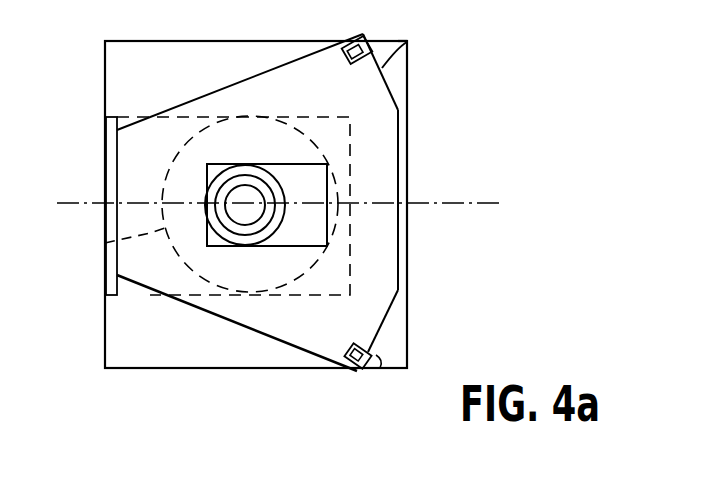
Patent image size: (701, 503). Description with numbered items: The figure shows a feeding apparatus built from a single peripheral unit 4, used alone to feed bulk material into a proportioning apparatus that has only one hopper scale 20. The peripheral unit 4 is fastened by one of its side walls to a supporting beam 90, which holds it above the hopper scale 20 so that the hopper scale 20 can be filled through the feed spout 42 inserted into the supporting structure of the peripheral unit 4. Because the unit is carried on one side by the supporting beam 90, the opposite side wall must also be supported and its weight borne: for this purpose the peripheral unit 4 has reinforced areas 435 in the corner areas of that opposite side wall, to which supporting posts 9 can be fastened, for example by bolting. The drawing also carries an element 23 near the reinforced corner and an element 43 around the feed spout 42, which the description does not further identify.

The peripheral unit 4 is at (390, 145).
The supporting posts 9 is at (388, 30).
The hopper scale 20 is at (105, 243).
The rounded corner 23 is at (390, 75).
The feed spout 42 is at (245, 217).
The housing block 43 is at (315, 233).
The supporting beam 90 is at (105, 162).
The reinforced areas 435 is at (408, 41).